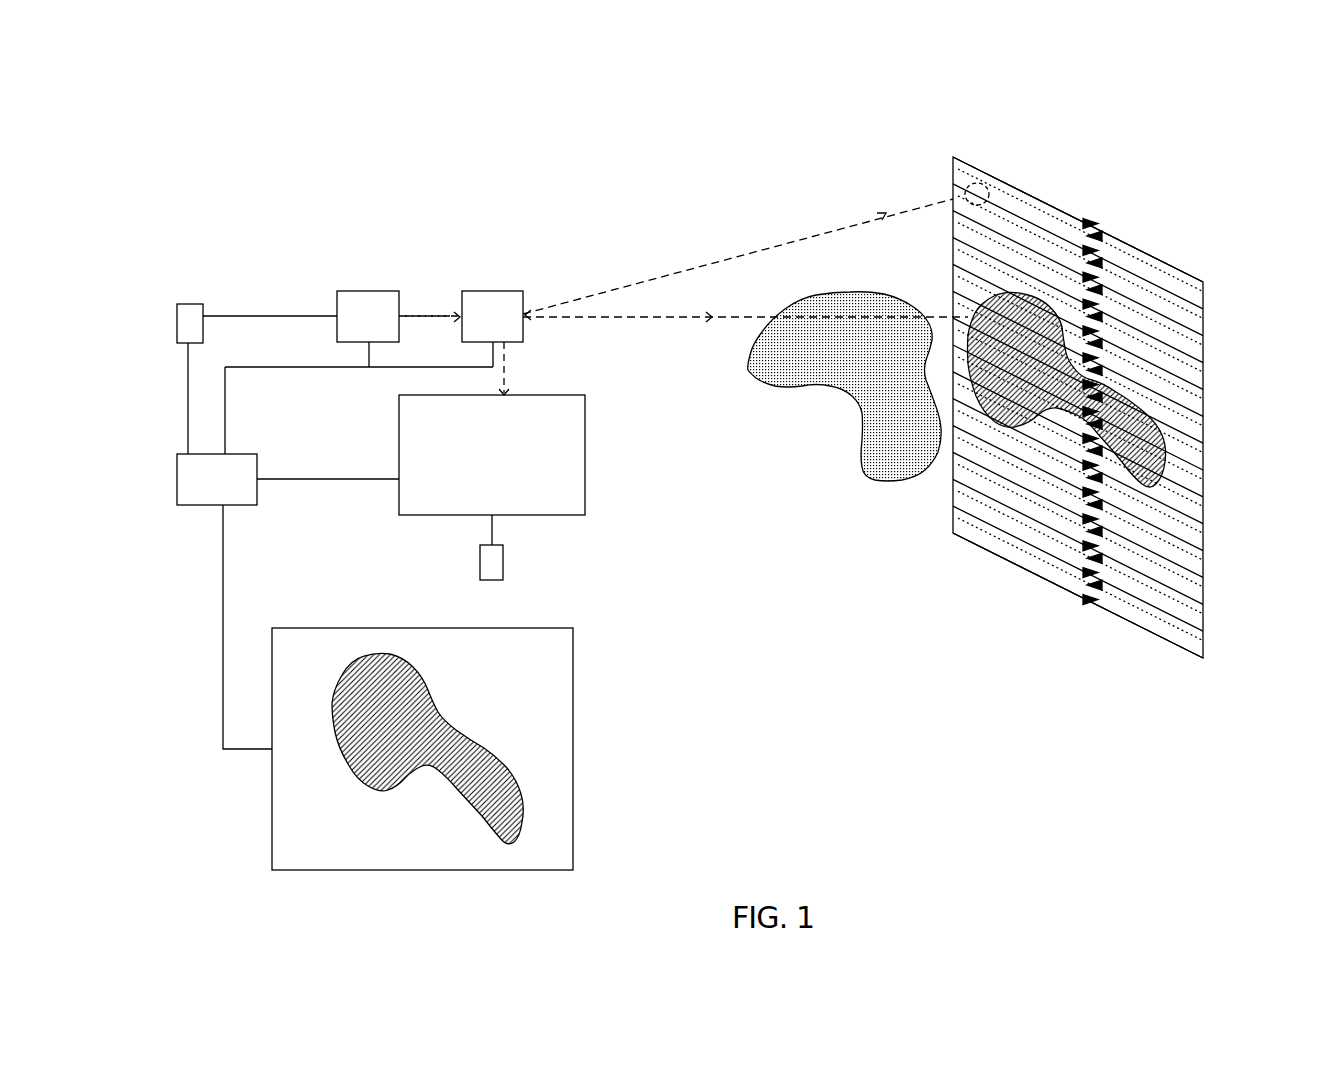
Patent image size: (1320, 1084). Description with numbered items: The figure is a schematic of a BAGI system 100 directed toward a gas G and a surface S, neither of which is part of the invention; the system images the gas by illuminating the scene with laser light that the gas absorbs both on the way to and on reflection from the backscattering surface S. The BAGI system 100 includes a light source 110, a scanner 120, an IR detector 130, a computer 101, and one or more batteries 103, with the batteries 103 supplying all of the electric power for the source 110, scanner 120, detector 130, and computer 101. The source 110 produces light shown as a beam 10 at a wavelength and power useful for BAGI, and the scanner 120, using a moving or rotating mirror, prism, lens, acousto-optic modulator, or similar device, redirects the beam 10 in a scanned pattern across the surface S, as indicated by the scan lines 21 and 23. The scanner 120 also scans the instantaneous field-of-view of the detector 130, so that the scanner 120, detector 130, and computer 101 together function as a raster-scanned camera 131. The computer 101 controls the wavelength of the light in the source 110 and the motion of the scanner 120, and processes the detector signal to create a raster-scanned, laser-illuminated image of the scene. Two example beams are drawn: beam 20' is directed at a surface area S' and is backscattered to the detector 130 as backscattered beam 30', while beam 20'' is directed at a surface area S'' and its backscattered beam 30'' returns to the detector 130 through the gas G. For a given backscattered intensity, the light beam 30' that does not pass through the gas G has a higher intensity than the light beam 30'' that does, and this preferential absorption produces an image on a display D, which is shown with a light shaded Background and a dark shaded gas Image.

The BAGI system 100 is at (387, 200).
The computer 101 is at (188, 505).
The batteries 103 is at (193, 303).
The light source 110 is at (365, 291).
The beam 10 is at (430, 314).
The scanner 120 is at (490, 291).
The IR detector 130 is at (415, 516).
The raster-scanned camera 131 is at (620, 523).
The beam 20' is at (738, 256).
The beam 20'' is at (745, 333).
The backscattered beam 30' is at (723, 246).
The backscattered beam 30'' is at (774, 297).
The scanned pattern 21 is at (1078, 297).
The scanned pattern 23 is at (1138, 318).
The surface S is at (1115, 407).
The surface area S' is at (977, 157).
The surface area S'' is at (1022, 416).
The gas G is at (857, 467).
The display D is at (600, 688).
The background Background is at (512, 707).
The gas image Image is at (513, 777).